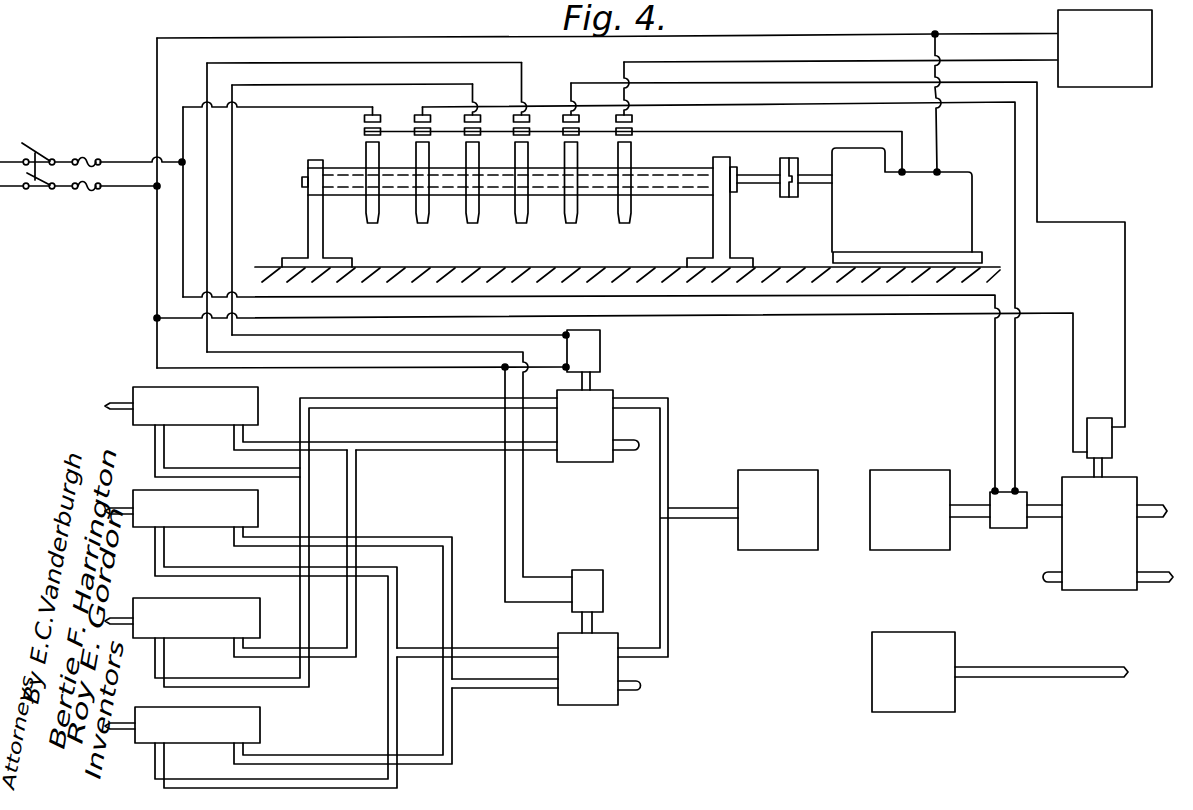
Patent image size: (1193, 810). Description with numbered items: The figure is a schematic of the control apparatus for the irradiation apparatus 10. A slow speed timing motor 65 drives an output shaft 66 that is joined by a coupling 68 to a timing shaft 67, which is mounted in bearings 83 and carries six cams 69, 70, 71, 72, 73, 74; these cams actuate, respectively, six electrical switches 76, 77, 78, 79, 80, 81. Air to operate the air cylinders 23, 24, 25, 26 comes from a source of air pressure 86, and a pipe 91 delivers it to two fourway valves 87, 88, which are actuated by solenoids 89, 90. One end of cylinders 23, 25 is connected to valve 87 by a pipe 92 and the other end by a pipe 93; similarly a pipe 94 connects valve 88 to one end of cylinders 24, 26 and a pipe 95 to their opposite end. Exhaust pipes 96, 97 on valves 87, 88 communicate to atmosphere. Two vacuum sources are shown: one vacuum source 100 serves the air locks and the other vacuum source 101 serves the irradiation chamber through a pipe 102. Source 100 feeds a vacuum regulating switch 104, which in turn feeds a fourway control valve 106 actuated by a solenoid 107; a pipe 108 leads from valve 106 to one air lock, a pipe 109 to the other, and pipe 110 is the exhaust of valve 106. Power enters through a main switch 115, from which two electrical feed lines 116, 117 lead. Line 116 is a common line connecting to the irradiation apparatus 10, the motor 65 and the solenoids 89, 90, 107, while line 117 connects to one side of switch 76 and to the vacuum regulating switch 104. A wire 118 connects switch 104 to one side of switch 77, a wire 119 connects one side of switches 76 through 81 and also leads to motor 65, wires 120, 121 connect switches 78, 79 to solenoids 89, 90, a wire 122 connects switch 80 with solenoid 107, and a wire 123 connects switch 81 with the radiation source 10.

The irradiation apparatus 10 is at (1095, 64).
The air cylinder 23 is at (194, 418).
The air cylinder 24 is at (199, 521).
The air cylinder 25 is at (202, 631).
The air cylinder 26 is at (209, 739).
The slow speed timing motor 65 is at (892, 220).
The output shaft 66 is at (820, 186).
The timing shaft 67 is at (663, 191).
The coupling 68 is at (780, 199).
The cam 69 is at (378, 224).
The cam 70 is at (428, 224).
The cam 71 is at (474, 224).
The cam 72 is at (522, 224).
The cam 73 is at (570, 224).
The cam 74 is at (626, 224).
The electrical switch 76 is at (365, 120).
The electrical switch 77 is at (412, 118).
The electrical switch 78 is at (481, 118).
The electrical switch 79 is at (530, 118).
The electrical switch 80 is at (579, 120).
The electrical switch 81 is at (633, 119).
The bearings 83 is at (316, 163).
The source of air pressure 86 is at (776, 470).
The fourway valve 87 is at (576, 441).
The fourway valve 88 is at (600, 682).
The solenoid 89 is at (600, 352).
The solenoid 90 is at (603, 604).
The pipe 91 is at (670, 484).
The pipe 92 is at (462, 400).
The pipe 93 is at (483, 444).
The pipe 94 is at (507, 649).
The pipe 95 is at (503, 691).
The exhaust pipe 96 is at (636, 446).
The exhaust pipe 97 is at (628, 695).
The vacuum source 100 is at (908, 479).
The vacuum source 101 is at (922, 636).
The pipe 102 is at (1076, 680).
The vacuum regulating switch 104 is at (1010, 529).
The fourway control valve 106 is at (1087, 556).
The solenoid 107 is at (1113, 447).
The pipe 108 is at (1157, 491).
The pipe 109 is at (1158, 584).
The exhaust pipe 110 is at (1048, 584).
The main switch 115 is at (47, 152).
The electrical feed line 116 is at (127, 190).
The electrical feed line 117 is at (127, 159).
The wire 118 is at (1017, 398).
The wire 119 is at (902, 142).
The wire 120 is at (505, 336).
The wire 121 is at (532, 557).
The wire 122 is at (1125, 347).
The wire 123 is at (1046, 62).